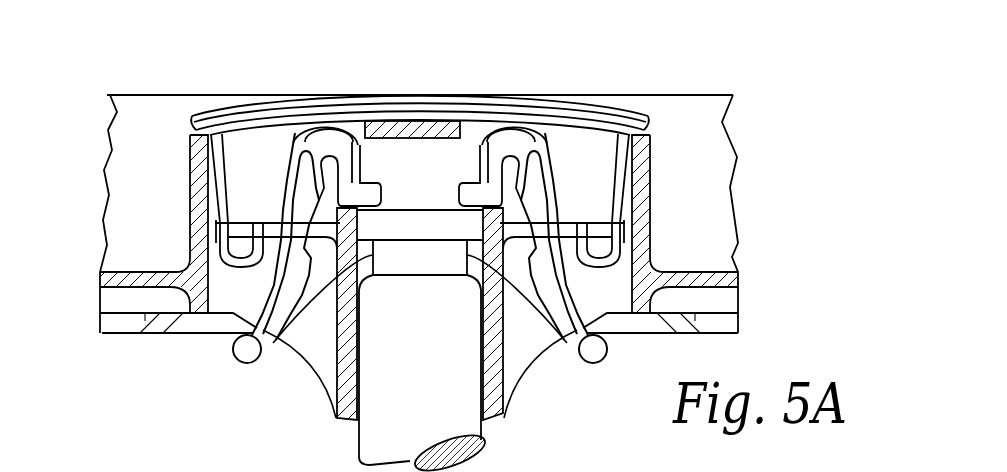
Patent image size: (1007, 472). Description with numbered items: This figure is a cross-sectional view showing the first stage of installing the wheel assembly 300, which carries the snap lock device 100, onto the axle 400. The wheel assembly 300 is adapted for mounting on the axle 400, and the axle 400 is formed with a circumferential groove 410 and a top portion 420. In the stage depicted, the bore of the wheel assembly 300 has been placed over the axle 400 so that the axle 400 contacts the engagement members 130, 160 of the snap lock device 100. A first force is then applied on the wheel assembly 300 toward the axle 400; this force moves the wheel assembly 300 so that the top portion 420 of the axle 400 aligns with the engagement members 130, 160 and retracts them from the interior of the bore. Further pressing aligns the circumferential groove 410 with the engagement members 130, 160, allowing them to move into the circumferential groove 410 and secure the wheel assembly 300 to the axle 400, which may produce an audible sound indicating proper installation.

The snap lock device 100 is at (549, 71).
The engagement member 130 is at (373, 182).
The engagement member 160 is at (465, 182).
The wheel assembly 300 is at (137, 94).
The axle 400 is at (462, 411).
The circumferential groove 410 is at (544, 334).
The top portion 420 is at (292, 338).